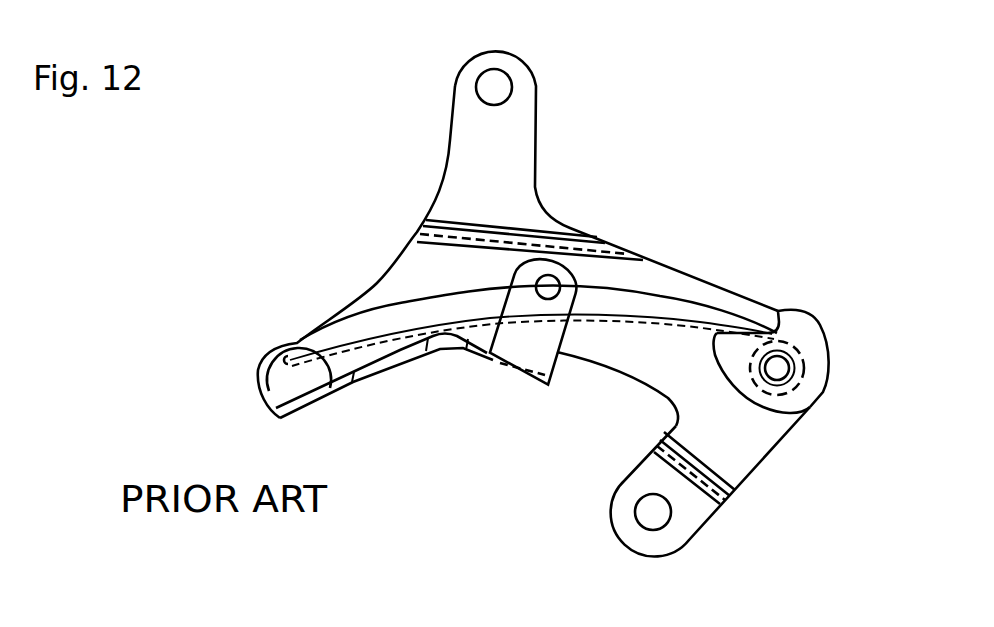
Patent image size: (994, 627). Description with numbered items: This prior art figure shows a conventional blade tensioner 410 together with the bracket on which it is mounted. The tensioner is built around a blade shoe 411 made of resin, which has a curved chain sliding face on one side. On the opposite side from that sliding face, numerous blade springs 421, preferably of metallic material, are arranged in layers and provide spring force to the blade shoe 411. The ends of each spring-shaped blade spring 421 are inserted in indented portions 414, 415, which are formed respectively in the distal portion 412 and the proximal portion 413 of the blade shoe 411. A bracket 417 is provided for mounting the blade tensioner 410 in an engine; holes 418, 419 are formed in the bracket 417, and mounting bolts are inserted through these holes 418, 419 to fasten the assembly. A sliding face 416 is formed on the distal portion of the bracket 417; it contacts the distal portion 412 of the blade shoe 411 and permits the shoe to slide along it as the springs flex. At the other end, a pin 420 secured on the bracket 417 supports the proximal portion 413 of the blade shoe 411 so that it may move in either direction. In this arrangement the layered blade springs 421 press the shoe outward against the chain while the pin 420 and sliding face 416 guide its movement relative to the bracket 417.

The blade tensioner 410 is at (779, 92).
The blade shoe 411 is at (383, 317).
The distal portion 412 is at (268, 383).
The proximal portion 413 is at (772, 401).
The indented portion 414 is at (290, 356).
The indented portion 415 is at (780, 317).
The sliding face 416 is at (306, 407).
The bracket 417 is at (747, 447).
The hole 418 is at (652, 508).
The hole 419 is at (497, 85).
The pin 420 is at (795, 367).
The blade spring 421 is at (680, 317).